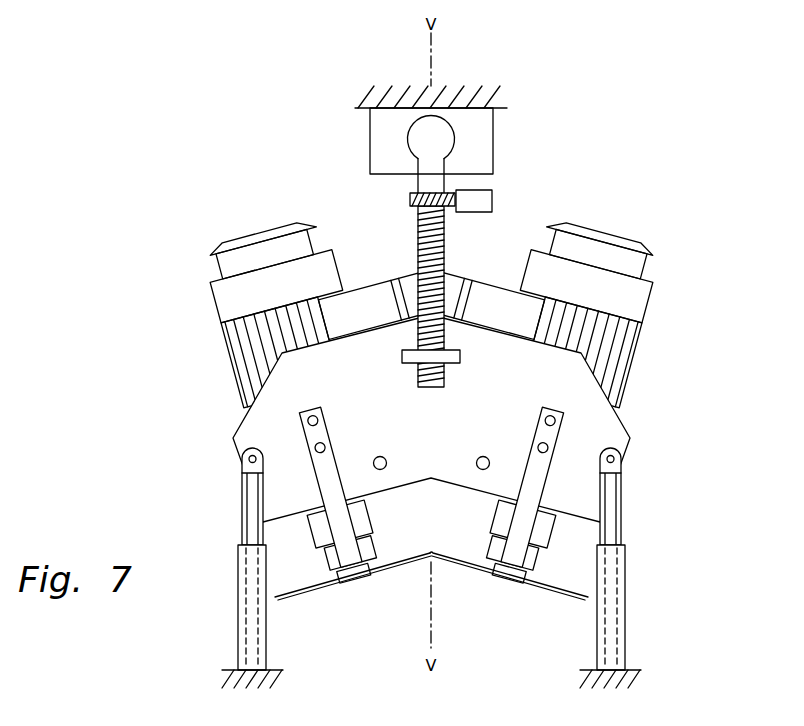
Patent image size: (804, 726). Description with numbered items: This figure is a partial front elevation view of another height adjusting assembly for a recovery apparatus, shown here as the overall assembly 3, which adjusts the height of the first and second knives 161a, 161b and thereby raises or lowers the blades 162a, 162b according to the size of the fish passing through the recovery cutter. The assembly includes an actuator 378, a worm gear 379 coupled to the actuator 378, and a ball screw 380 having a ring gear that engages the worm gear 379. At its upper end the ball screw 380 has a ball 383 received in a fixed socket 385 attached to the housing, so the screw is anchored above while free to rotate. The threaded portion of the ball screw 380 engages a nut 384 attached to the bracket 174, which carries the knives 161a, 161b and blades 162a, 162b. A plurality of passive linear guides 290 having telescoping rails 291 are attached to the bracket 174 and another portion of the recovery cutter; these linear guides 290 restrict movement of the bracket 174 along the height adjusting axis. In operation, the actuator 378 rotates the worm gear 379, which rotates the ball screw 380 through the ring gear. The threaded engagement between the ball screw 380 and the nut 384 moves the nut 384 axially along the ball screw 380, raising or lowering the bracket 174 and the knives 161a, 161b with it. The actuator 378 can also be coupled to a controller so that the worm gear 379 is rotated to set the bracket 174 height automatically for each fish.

The dual-head apparatus 3 is at (508, 216).
The first knife 161a is at (236, 211).
The second knife 161b is at (627, 211).
The blade 162a is at (303, 594).
The blade 162b is at (548, 594).
The bracket 174 is at (617, 425).
The passive linear guide 290 is at (238, 622).
The telescoping rail 291 is at (243, 522).
The actuator 378 is at (492, 197).
The worm gear 379 is at (410, 205).
The ball screw 380 is at (445, 238).
The ball 383 is at (446, 128).
The nut 384 is at (402, 352).
The fixed socket 385 is at (493, 148).